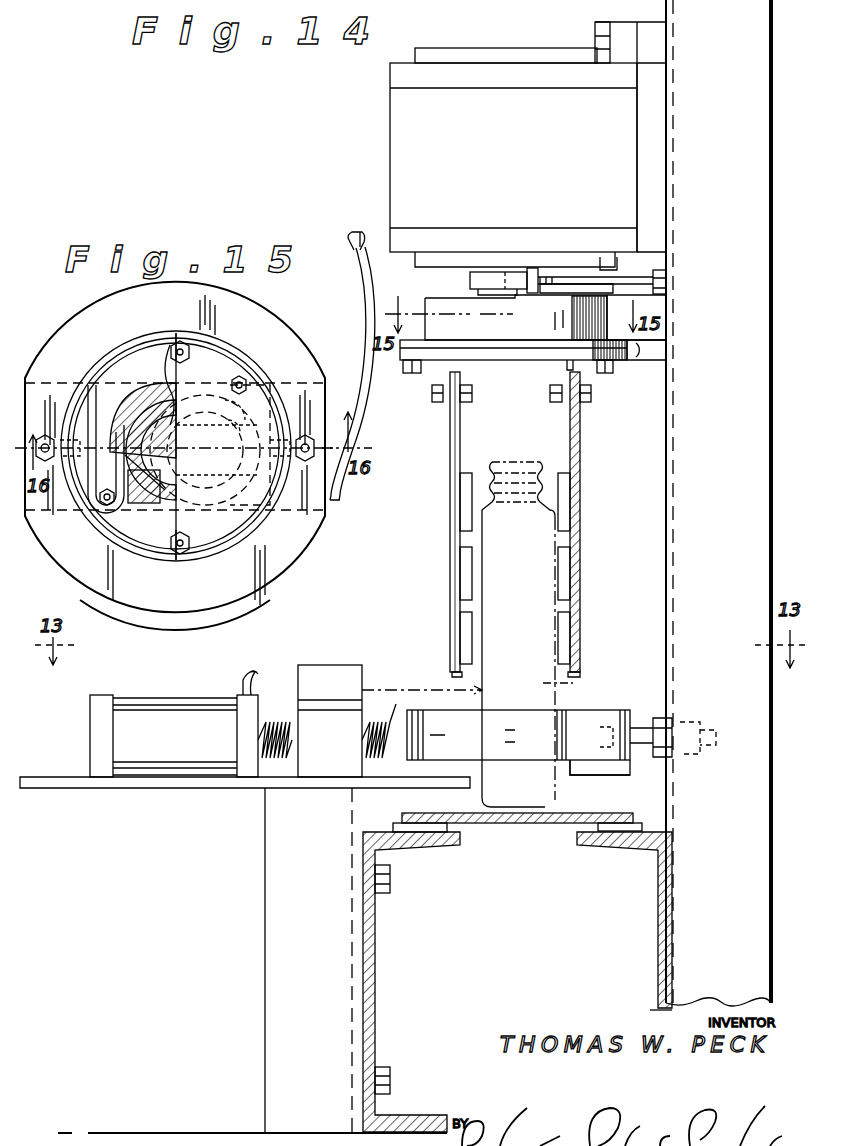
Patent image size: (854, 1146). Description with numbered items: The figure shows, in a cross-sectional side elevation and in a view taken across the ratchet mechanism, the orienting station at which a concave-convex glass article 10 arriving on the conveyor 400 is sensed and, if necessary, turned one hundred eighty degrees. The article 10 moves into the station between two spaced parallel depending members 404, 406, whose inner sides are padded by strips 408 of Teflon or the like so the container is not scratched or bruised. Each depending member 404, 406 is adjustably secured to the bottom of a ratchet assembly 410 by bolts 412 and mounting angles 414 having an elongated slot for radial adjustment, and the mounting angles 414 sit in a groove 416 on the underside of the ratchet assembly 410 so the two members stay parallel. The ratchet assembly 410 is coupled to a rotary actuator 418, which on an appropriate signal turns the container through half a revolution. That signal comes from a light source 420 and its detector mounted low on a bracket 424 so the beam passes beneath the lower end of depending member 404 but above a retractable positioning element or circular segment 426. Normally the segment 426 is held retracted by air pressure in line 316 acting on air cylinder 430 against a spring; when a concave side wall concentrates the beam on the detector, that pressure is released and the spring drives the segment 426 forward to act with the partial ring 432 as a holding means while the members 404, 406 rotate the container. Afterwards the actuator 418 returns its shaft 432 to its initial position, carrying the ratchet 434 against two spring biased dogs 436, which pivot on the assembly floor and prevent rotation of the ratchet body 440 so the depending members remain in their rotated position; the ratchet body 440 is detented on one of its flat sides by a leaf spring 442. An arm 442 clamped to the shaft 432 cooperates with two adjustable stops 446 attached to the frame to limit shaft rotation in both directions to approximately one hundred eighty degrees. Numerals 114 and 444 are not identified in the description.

In FIG. 14, the concave-convex article 10 is at (616, 685).
In FIG. 14, the plate 114 is at (444, 385).
In FIG. 14, the air pressure line 316 is at (242, 678).
In FIG. 14, the conveyor 400 is at (503, 824).
In FIG. 14, the depending member 404 is at (450, 459).
In FIG. 14, the depending member 406 is at (580, 457).
In FIG. 14, the strip 408 is at (466, 623).
In FIG. 14, the ratchet assembly 410 is at (459, 353).
In FIG. 15, the ratchet assembly 410 is at (221, 617).
In FIG. 14, the bolt 412 is at (410, 370).
In FIG. 14, the mounting angle 414 is at (583, 401).
In FIG. 15, the groove 416 is at (30, 530).
In FIG. 14, the rotary actuator 418 is at (380, 135).
In FIG. 14, the light source 420 is at (338, 665).
In FIG. 14, the bracket 424 is at (340, 752).
In FIG. 14, the retractable positioning element 426 is at (547, 757).
In FIG. 14, the air cylinder 430 is at (90, 730).
In FIG. 14, the partial ring 432 is at (520, 272).
In FIG. 15, the partial ring 432 is at (162, 382).
In FIG. 15, the ratchet 434 is at (170, 345).
In FIG. 15, the spring biased dog 436 is at (223, 360).
In FIG. 15, the ratchet body 440 is at (262, 582).
In FIG. 14, the arm 442 is at (648, 352).
In FIG. 15, the arm 442 is at (365, 313).
In FIG. 14, the bracket 444 is at (478, 272).
In FIG. 14, the adjustable stop 446 is at (527, 269).